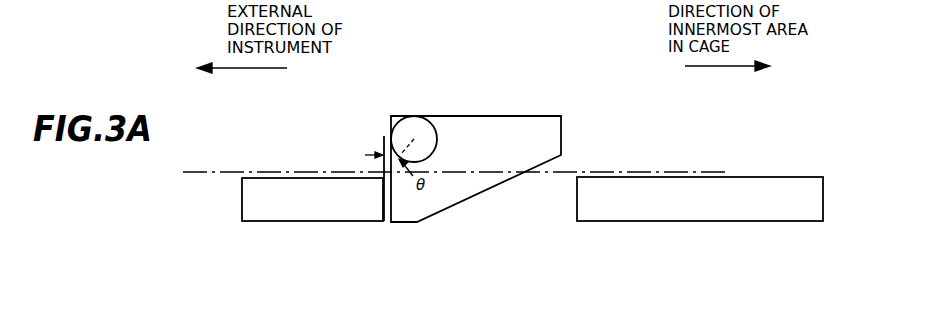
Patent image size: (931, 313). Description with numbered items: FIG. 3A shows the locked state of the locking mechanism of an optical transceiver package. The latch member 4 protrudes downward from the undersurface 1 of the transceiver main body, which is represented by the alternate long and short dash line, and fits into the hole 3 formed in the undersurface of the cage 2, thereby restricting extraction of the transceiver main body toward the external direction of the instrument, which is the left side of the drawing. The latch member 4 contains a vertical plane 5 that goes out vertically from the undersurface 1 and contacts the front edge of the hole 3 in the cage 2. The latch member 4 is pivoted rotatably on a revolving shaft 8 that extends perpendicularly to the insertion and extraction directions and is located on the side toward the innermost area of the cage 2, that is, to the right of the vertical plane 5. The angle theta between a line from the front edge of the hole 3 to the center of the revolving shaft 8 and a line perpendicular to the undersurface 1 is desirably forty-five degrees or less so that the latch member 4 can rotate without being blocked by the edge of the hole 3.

The undersurface of the transceiver main body 1 is at (193, 175).
The cage 2 is at (353, 221).
The hole 3 is at (522, 210).
The latch member 4 is at (520, 128).
The vertical plane 5 is at (390, 125).
The revolving shaft 8 is at (418, 128).